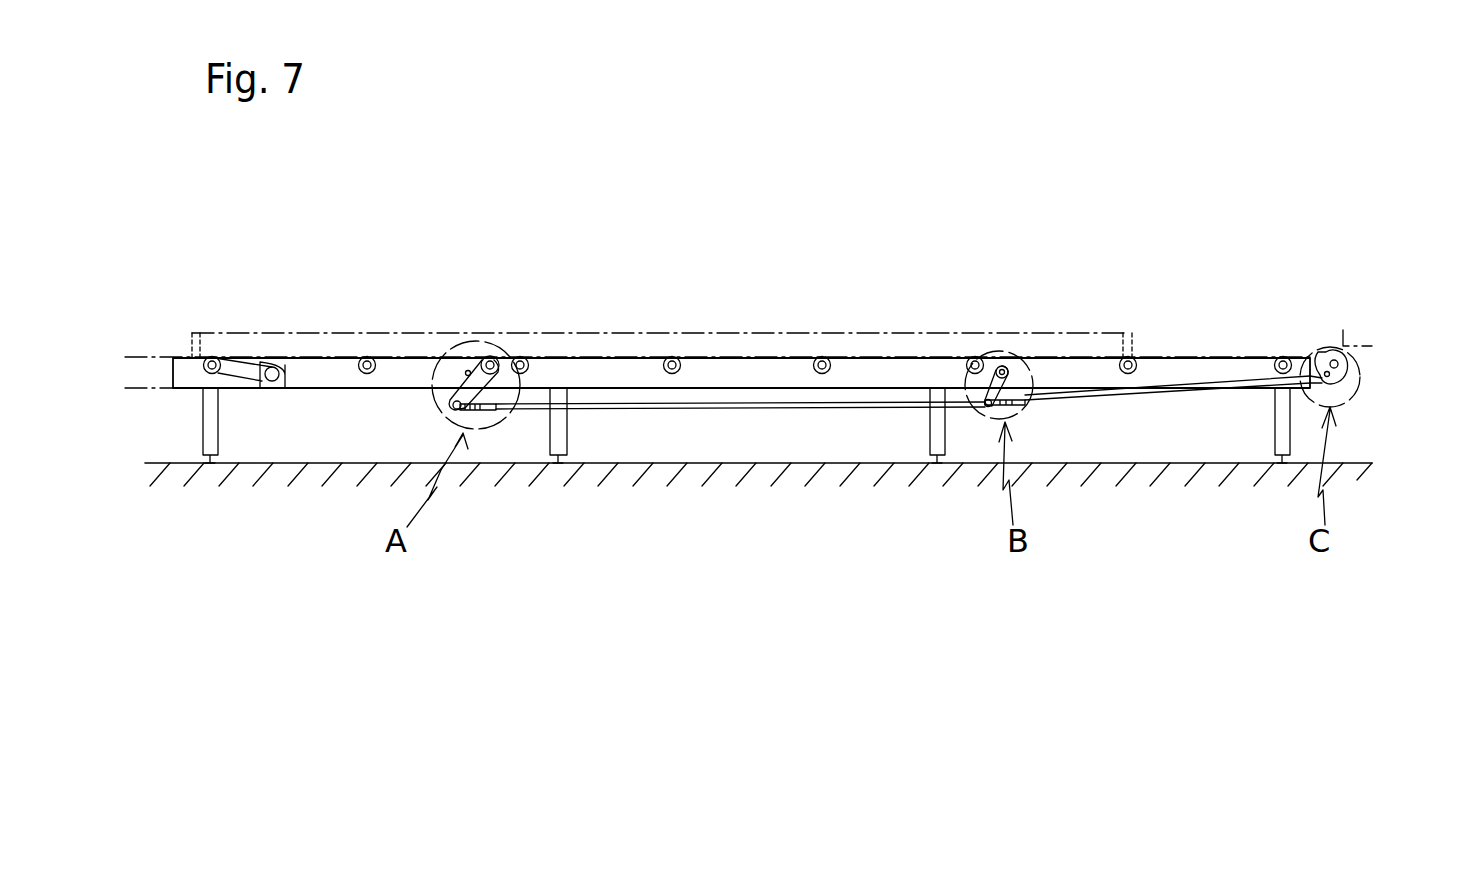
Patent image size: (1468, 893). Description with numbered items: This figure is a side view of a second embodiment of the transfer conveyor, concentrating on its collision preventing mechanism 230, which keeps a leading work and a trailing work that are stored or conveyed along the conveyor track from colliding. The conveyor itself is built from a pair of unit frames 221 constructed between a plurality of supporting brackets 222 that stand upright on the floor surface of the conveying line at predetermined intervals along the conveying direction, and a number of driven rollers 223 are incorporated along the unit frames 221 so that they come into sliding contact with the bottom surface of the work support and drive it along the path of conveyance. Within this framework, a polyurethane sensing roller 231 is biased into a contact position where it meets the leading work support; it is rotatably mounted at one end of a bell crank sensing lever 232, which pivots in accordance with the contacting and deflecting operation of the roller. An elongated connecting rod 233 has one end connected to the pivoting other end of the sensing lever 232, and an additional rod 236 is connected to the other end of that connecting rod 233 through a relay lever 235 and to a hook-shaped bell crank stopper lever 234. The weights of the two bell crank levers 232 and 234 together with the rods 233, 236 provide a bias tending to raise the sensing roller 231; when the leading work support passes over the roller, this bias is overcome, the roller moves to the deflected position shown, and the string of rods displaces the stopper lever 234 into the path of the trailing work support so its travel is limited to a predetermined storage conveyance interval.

The collision preventing mechanism 230 is at (814, 443).
The unit frame 221 is at (190, 365).
The supporting bracket 222 is at (218, 428).
The driven roller 223 is at (217, 357).
The sensing roller 231 is at (487, 357).
The sensing lever 232 is at (455, 398).
The connecting rod 233 is at (742, 410).
The stopper lever 234 is at (1338, 372).
The relay lever 235 is at (1012, 398).
The additional rod 236 is at (1152, 394).